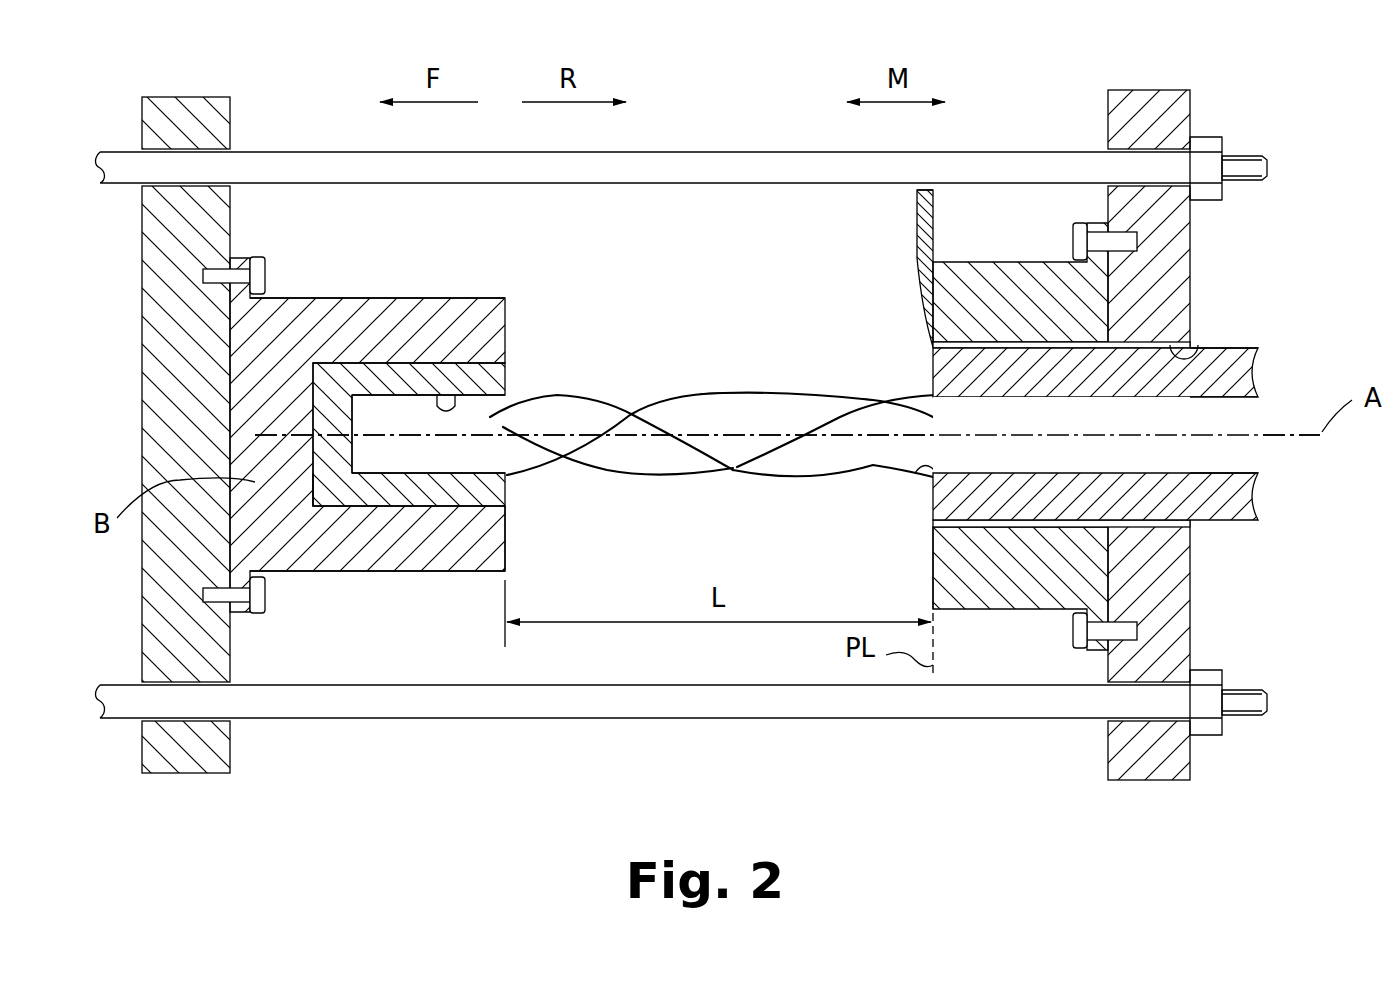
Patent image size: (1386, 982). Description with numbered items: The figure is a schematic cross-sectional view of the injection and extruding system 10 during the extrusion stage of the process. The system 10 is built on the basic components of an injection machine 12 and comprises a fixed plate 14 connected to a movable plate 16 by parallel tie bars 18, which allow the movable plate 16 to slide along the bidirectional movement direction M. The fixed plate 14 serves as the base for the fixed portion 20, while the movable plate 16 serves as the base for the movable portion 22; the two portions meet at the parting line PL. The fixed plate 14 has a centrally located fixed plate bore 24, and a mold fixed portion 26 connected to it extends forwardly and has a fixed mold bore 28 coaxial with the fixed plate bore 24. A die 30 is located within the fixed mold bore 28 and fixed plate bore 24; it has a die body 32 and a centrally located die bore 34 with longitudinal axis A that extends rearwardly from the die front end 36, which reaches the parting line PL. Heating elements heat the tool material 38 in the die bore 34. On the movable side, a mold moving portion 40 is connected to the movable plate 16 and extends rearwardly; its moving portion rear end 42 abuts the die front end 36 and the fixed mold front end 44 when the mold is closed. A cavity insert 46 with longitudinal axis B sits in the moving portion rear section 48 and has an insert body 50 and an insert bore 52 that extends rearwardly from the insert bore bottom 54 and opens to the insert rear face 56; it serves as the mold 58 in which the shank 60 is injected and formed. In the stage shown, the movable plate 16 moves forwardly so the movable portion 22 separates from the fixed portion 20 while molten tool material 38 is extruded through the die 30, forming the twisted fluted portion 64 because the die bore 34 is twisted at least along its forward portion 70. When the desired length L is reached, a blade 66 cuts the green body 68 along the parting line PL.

The injection and extruding system 10 is at (1274, 120).
The injection machine 12 is at (527, 260).
The fixed plate 14 is at (1167, 256).
The movable plate 16 is at (190, 360).
The tie bars 18 is at (673, 170).
The fixed portion 20 is at (987, 744).
The movable portion 22 is at (485, 750).
The fixed plate bore 24 is at (1190, 347).
The mold fixed portion 26 is at (1000, 573).
The fixed mold bore 28 is at (1000, 343).
The die 30 is at (1235, 515).
The die body 32 is at (1244, 362).
The die bore 34 is at (1243, 420).
The die front end 36 is at (933, 508).
The tool material 38 is at (1242, 460).
The mold moving portion 40 is at (383, 535).
The moving portion rear end 42 is at (506, 327).
The fixed mold front end 44 is at (925, 335).
The cavity insert 46 is at (333, 487).
The moving portion rear section 48 is at (488, 563).
The insert body 50 is at (333, 382).
The insert bore 52 is at (453, 396).
The insert bore bottom 54 is at (380, 410).
The insert rear face 56 is at (507, 495).
The mold 58 is at (441, 457).
The shank 60 is at (517, 420).
The fluted portion 64 is at (722, 437).
The blade 66 is at (917, 226).
The green body 68 is at (883, 437).
The forward portion 70 is at (922, 470).